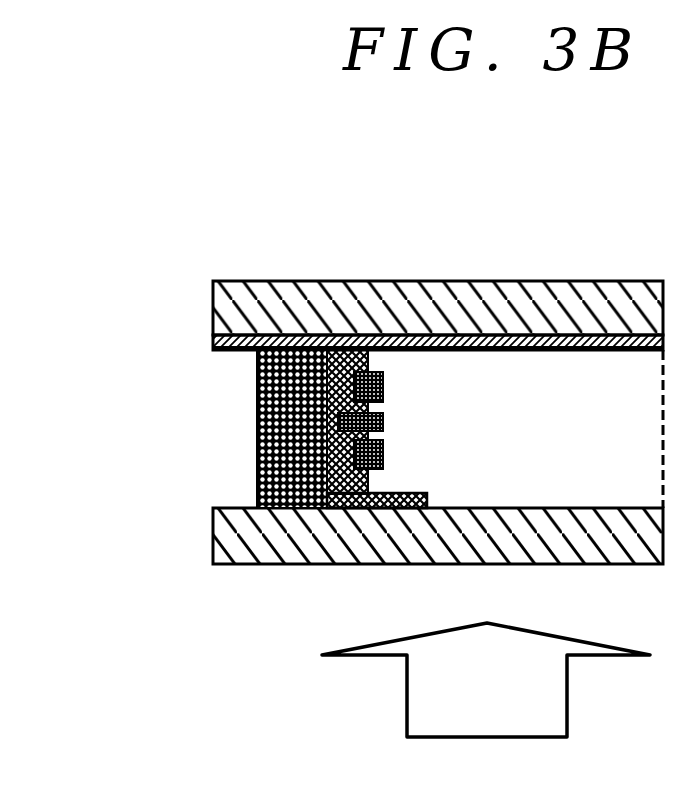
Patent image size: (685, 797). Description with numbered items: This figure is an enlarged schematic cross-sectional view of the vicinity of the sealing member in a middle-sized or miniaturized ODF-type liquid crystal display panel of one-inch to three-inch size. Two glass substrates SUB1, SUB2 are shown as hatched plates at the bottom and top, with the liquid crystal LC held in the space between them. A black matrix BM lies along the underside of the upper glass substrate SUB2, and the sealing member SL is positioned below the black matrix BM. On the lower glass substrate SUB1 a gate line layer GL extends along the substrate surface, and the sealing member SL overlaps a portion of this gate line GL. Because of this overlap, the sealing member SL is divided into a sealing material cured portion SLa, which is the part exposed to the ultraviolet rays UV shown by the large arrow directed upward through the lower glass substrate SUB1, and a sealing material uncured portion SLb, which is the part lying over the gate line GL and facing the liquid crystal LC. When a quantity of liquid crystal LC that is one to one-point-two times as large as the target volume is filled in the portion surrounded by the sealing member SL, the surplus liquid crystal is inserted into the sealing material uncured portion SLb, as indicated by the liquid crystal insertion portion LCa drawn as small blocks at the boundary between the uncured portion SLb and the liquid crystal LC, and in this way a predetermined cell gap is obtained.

The glass substrate SUB2 is at (230, 313).
The glass substrate SUB1 is at (228, 534).
The black matrix BM is at (548, 342).
The liquid crystal LC is at (590, 392).
The liquid crystal insertion portion LCa is at (385, 385).
The sealing member SL is at (233, 350).
The sealing material cured portion SLa is at (257, 422).
The sealing material uncured portion SLb is at (352, 337).
The gate line layer GL is at (355, 508).
The ultraviolet rays UV is at (486, 680).